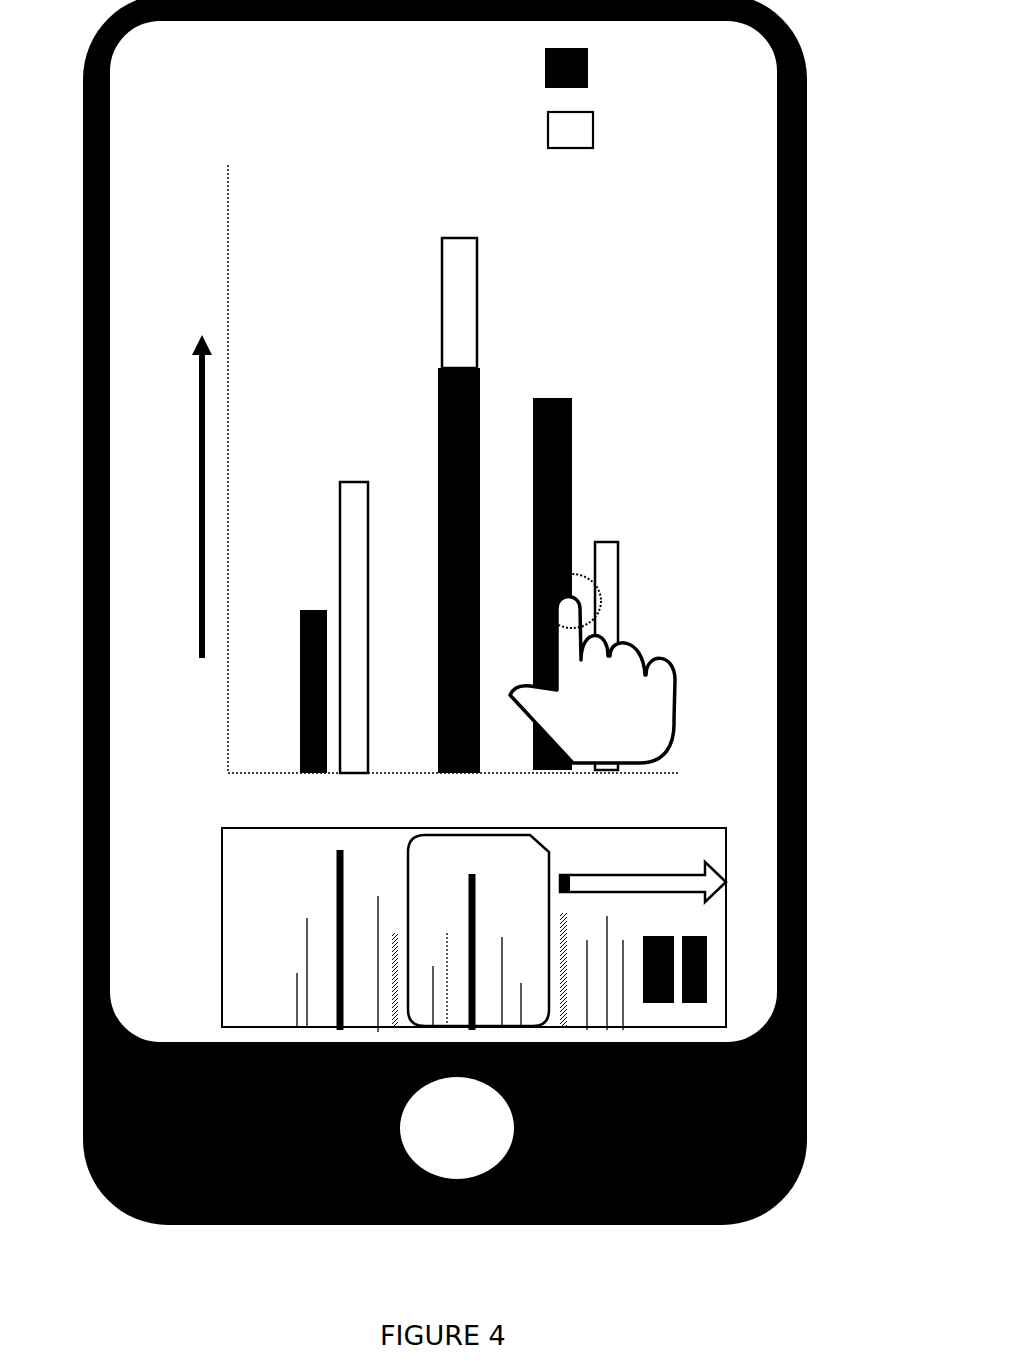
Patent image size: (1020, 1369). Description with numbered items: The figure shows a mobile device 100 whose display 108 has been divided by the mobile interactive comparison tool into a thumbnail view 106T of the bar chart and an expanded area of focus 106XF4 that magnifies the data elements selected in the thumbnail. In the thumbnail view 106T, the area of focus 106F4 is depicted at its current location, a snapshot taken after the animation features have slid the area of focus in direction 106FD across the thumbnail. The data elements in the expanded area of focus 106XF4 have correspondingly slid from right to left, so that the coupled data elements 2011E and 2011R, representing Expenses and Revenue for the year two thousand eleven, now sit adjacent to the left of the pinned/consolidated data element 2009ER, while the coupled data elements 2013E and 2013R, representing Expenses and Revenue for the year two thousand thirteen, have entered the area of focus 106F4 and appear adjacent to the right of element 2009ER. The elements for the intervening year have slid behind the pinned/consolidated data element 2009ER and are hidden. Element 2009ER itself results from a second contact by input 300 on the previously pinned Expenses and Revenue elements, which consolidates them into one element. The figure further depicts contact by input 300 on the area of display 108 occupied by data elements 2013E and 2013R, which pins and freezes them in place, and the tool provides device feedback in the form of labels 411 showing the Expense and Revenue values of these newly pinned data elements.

The mobile device 100 is at (158, 1237).
The display 108 is at (569, 98).
The expanded area of focus 106XF4 is at (450, 491).
The pinned/consolidated data element 2009ER is at (455, 220).
The data element 2011R is at (347, 470).
The data element 2011E is at (313, 600).
The data element 2013E is at (558, 383).
The data element 2013R is at (613, 535).
The labels 411 is at (673, 535).
The input 300 is at (592, 668).
The thumbnail view 106T is at (243, 817).
The area of focus 106F4 is at (557, 865).
The direction 106FD is at (681, 865).